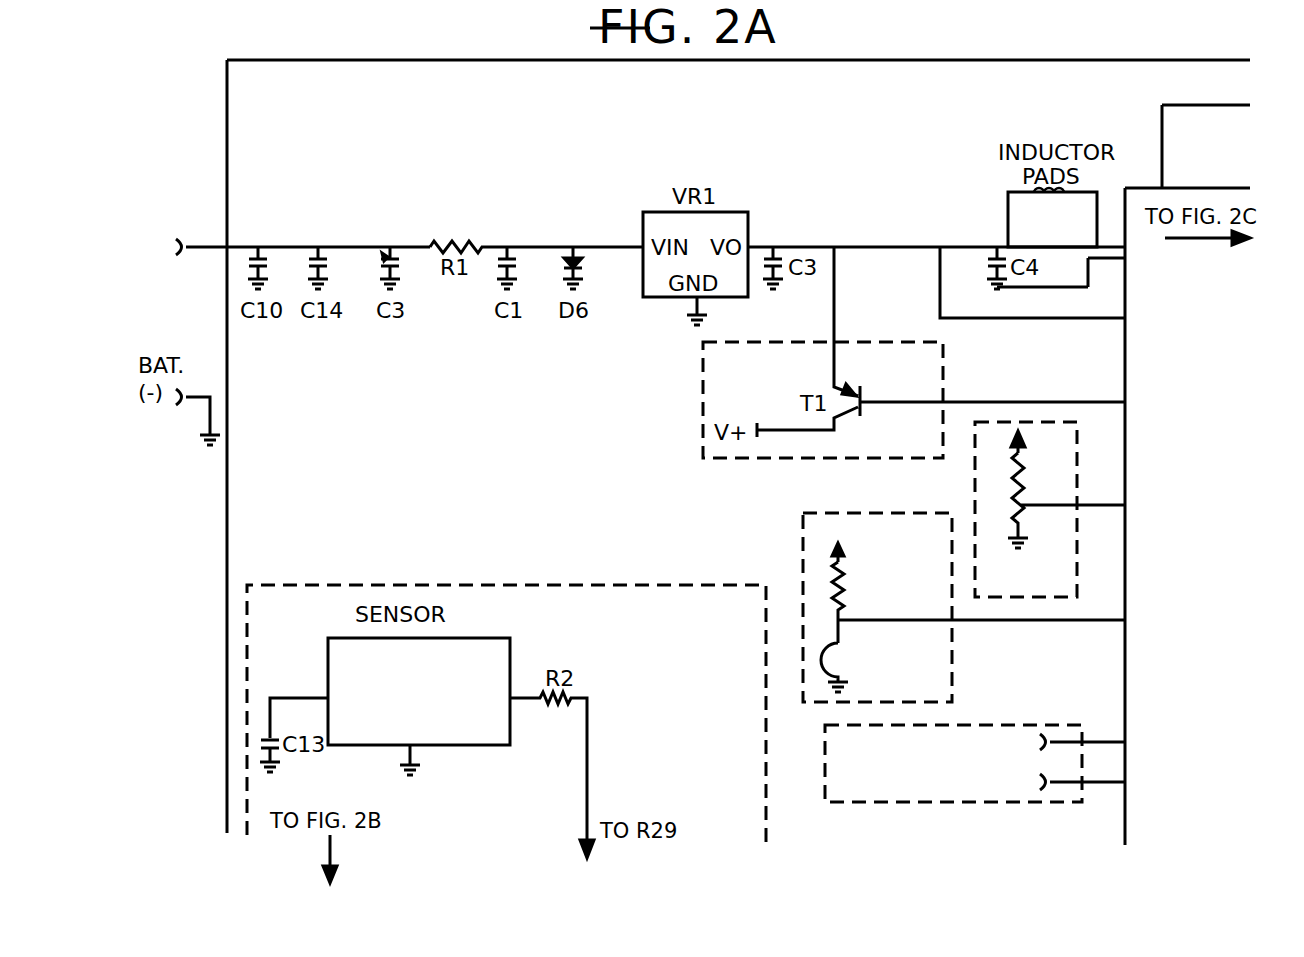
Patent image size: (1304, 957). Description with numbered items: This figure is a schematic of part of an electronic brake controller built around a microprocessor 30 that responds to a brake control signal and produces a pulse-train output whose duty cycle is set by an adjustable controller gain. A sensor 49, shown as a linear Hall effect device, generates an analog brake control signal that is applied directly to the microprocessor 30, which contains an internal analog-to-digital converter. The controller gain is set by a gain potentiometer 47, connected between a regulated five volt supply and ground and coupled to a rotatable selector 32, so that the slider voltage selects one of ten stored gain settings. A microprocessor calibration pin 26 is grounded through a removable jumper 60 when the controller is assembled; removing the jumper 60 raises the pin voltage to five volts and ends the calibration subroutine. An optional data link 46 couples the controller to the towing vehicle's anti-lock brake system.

The microprocessor calibration pin 26 is at (206, 247).
The microprocessor 30 is at (1192, 571).
The rotatable selector 32 is at (1023, 505).
The data link 46 is at (990, 731).
The gain potentiometer 47 is at (1004, 497).
The sensor 49 is at (518, 668).
The removable jumper 60 is at (812, 696).